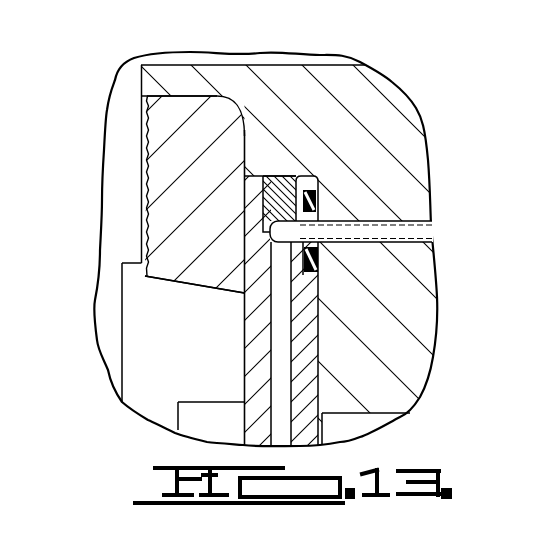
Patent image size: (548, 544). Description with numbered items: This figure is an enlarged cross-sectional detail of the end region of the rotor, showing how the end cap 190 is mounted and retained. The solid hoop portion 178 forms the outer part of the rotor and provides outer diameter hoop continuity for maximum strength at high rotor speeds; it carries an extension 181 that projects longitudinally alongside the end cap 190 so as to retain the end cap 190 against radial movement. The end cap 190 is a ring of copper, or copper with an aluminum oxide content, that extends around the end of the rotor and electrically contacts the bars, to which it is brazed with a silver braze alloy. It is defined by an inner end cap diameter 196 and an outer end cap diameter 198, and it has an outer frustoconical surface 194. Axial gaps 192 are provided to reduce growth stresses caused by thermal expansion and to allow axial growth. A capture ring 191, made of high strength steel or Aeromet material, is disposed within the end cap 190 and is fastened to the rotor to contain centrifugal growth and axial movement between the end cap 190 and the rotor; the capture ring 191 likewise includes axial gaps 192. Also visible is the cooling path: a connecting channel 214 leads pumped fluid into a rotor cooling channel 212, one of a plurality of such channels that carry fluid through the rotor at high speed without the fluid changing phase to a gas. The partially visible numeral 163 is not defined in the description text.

The housing assembly 163 is at (0, 100).
The solid hoop portion 178 is at (400, 334).
The extension 181 is at (197, 69).
The outer end cap diameter 198 is at (247, 138).
The inner end cap diameter 196 is at (143, 150).
The end cap 190 is at (175, 187).
The axial gap 192 is at (146, 215).
The outer frustoconical surface 194 is at (163, 282).
The capture ring 191 is at (170, 334).
The connecting channel 214 is at (285, 403).
The rotor cooling channel 212 is at (392, 228).